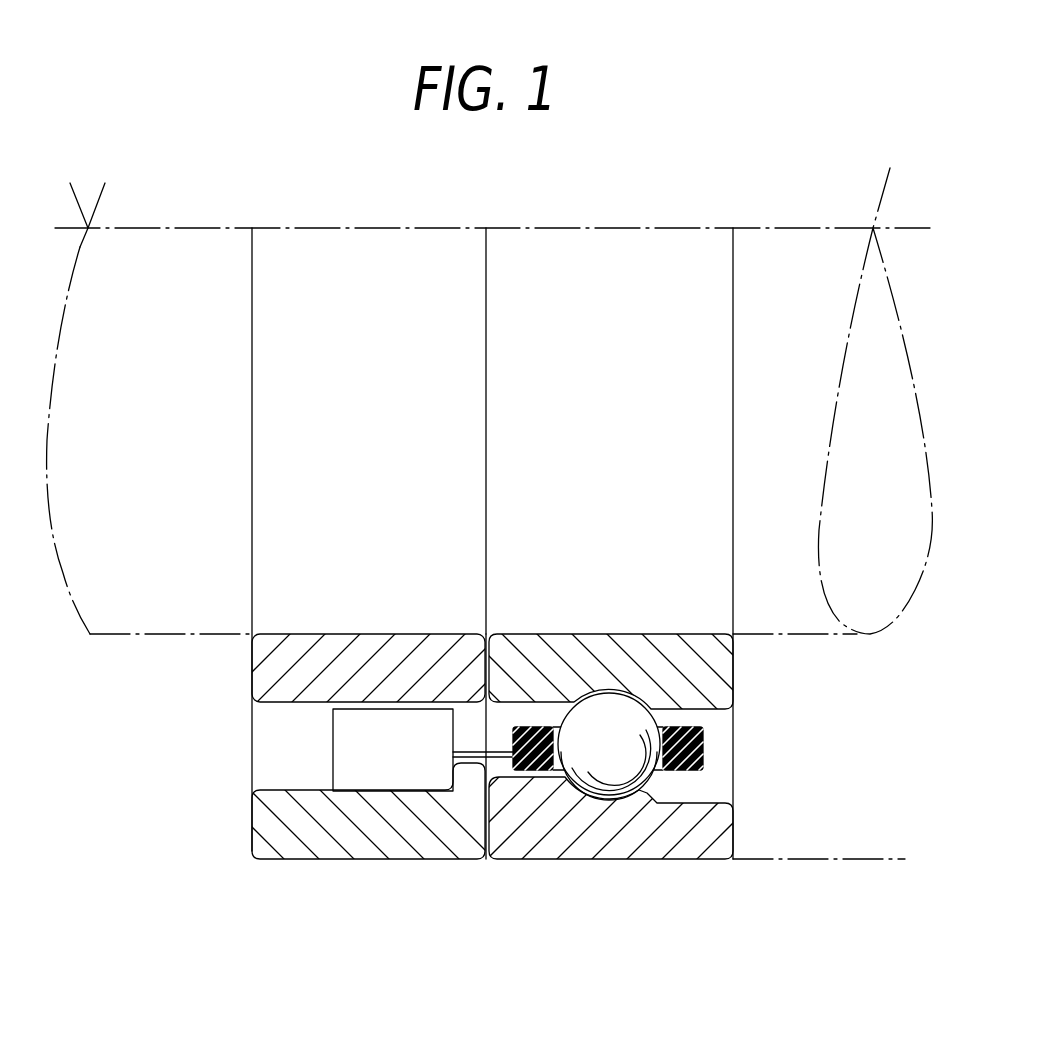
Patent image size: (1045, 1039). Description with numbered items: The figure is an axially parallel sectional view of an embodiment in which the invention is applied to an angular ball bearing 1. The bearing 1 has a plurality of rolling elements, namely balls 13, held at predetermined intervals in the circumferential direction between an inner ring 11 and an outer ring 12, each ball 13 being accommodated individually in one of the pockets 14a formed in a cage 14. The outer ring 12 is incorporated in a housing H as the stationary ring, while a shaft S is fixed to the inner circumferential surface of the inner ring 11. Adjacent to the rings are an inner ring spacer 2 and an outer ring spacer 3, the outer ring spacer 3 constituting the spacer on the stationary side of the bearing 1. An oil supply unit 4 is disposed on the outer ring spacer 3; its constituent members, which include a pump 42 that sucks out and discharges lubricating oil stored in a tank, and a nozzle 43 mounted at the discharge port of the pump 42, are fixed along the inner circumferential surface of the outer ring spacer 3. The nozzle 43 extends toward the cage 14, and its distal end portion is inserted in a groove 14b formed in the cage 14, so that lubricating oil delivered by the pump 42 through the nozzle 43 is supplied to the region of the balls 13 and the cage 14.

The angular ball bearing 1 is at (672, 908).
The inner ring spacer 2 is at (352, 648).
The outer ring spacer 3 is at (338, 845).
The oil supply unit 4 is at (277, 753).
The inner ring 11 is at (697, 682).
The outer ring 12 is at (595, 859).
The rolling elements (balls) 13 is at (607, 743).
The cage 14 is at (705, 740).
The pockets 14a is at (652, 762).
The groove 14b is at (543, 772).
The pump 42 is at (398, 770).
The nozzle 43 is at (502, 757).
The shaft S is at (143, 612).
The housing H is at (813, 859).